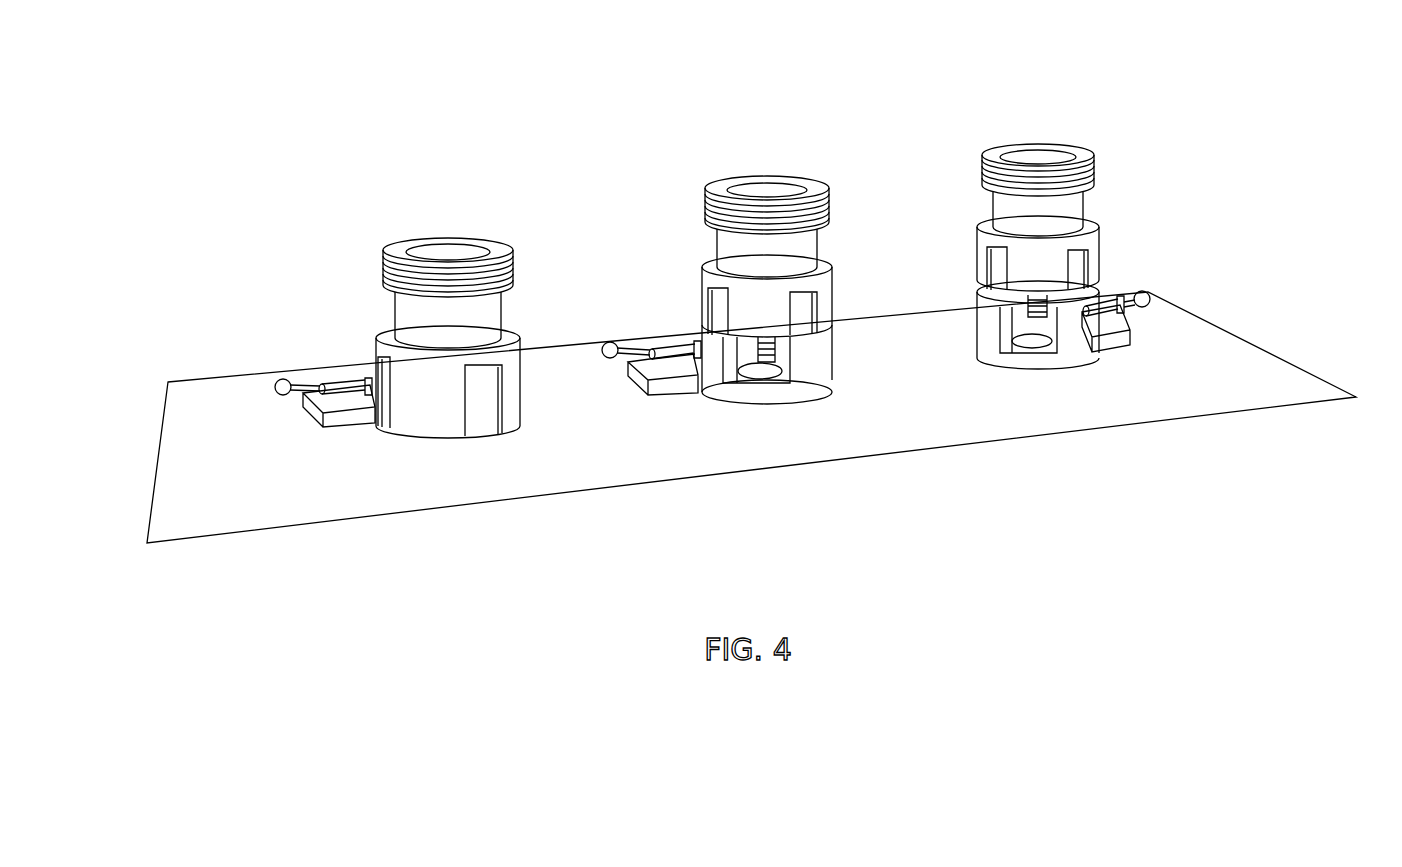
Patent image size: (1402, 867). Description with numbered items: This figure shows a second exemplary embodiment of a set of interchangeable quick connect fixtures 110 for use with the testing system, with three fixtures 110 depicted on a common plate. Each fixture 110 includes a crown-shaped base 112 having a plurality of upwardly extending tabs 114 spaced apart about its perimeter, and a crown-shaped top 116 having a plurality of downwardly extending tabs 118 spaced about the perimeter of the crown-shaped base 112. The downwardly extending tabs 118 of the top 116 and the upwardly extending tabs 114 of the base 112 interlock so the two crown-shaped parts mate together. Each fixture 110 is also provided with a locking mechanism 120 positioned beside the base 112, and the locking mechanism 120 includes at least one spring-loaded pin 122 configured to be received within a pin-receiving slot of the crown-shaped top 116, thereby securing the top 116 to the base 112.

The fixture 110 is at (420, 239).
The crown-shaped base 112 is at (485, 430).
The upwardly extending tabs 114 is at (387, 422).
The crown-shaped top 116 is at (492, 240).
The downwardly extending tabs 118 is at (432, 408).
The locking mechanism 120 is at (347, 383).
The spring-loaded pin 122 is at (293, 395).